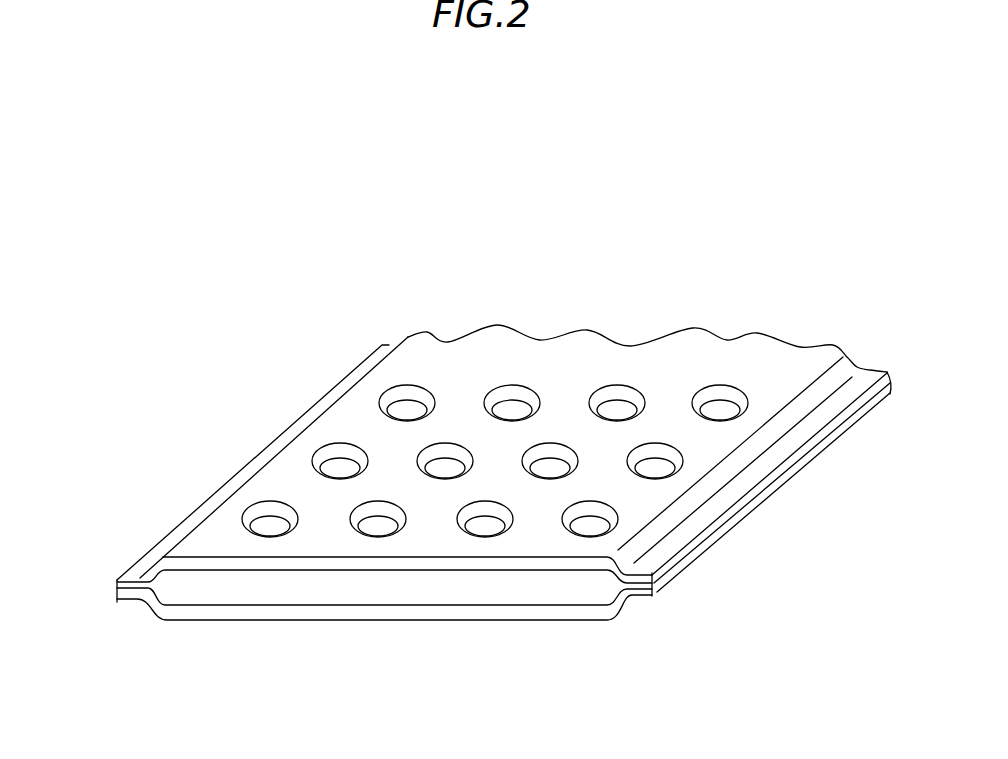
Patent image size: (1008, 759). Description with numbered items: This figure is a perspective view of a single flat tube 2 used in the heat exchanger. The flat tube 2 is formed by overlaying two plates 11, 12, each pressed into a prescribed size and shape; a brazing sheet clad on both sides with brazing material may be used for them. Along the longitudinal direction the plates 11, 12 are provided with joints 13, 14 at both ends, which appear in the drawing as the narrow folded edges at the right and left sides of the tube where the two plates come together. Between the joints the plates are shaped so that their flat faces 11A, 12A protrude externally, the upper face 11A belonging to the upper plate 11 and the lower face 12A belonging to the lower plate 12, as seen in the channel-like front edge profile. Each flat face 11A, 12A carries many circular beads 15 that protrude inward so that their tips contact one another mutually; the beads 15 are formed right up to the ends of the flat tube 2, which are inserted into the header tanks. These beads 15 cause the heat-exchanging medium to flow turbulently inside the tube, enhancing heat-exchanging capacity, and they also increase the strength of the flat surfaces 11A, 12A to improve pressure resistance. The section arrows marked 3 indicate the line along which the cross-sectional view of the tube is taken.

The flat tube 2 is at (503, 318).
The plate 11 is at (220, 565).
The flat face 11A is at (323, 533).
The plate 12 is at (225, 620).
The flat face 12A is at (328, 630).
The joint 13 is at (657, 580).
The joint 14 is at (113, 584).
The circular bead 15 is at (338, 463).
The section line 3- 3 is at (35, 553).